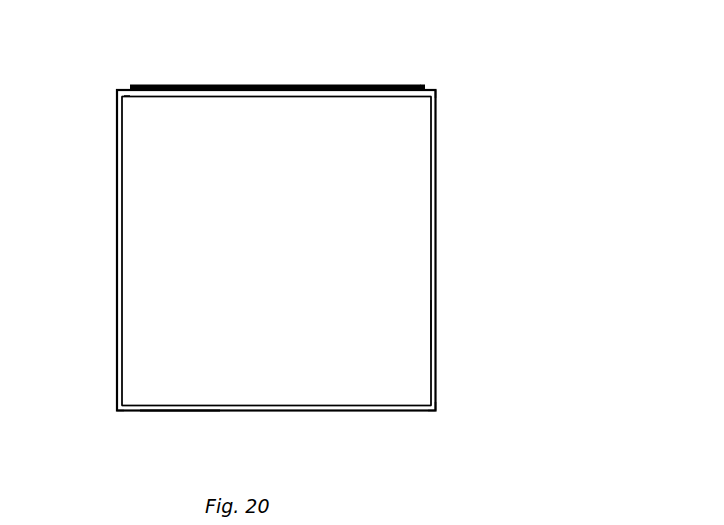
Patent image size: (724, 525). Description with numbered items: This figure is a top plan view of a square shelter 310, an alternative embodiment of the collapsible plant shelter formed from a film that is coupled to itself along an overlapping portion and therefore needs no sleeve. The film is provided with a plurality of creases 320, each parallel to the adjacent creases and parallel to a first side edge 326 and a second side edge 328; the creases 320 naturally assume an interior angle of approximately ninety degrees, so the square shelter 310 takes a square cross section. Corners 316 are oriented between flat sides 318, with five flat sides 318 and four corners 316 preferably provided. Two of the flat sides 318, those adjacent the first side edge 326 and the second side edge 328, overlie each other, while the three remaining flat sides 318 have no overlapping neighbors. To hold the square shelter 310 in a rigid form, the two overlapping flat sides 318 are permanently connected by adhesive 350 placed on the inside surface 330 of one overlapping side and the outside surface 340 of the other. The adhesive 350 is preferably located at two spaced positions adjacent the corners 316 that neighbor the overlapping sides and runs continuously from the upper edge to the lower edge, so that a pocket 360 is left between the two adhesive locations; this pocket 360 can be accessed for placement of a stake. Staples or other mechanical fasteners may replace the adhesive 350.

The square shelter 310 is at (492, 240).
The corners 316 is at (117, 88).
The flat sides 318 is at (241, 84).
The creases 320 is at (117, 90).
The first side edge 326 is at (432, 88).
The second side edge 328 is at (127, 98).
The inside surface 330 is at (430, 326).
The outside surface 340 is at (172, 412).
The adhesive 350 is at (138, 88).
The pocket 360 is at (292, 88).